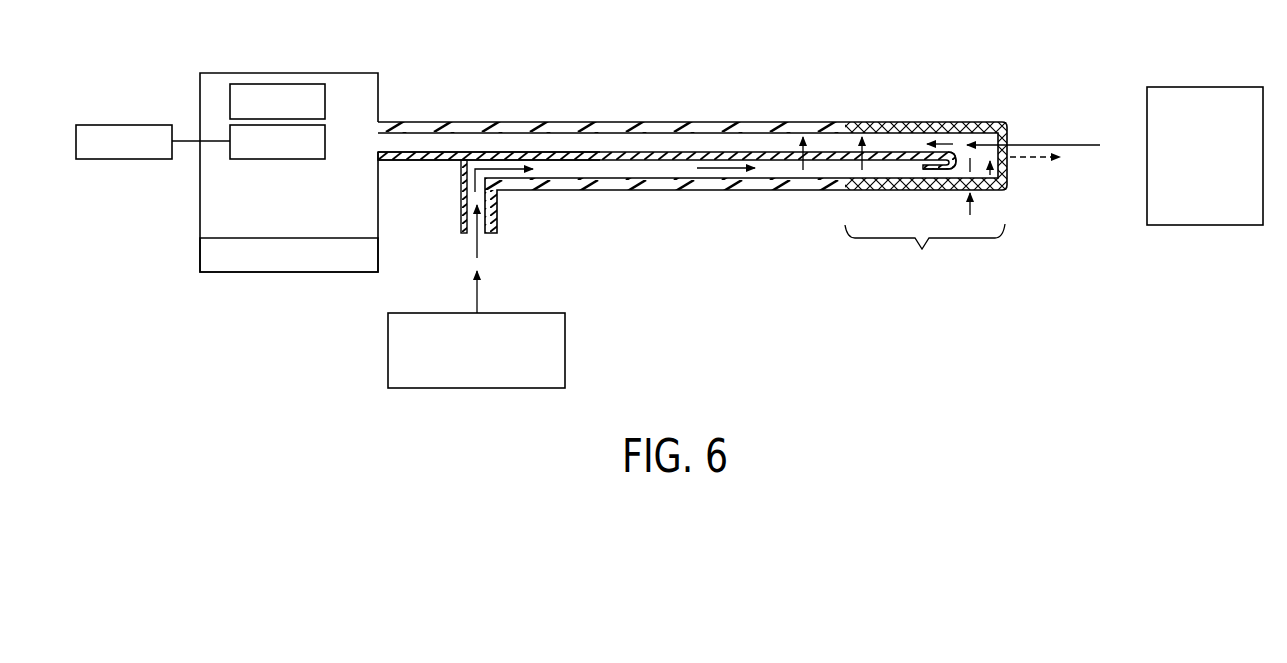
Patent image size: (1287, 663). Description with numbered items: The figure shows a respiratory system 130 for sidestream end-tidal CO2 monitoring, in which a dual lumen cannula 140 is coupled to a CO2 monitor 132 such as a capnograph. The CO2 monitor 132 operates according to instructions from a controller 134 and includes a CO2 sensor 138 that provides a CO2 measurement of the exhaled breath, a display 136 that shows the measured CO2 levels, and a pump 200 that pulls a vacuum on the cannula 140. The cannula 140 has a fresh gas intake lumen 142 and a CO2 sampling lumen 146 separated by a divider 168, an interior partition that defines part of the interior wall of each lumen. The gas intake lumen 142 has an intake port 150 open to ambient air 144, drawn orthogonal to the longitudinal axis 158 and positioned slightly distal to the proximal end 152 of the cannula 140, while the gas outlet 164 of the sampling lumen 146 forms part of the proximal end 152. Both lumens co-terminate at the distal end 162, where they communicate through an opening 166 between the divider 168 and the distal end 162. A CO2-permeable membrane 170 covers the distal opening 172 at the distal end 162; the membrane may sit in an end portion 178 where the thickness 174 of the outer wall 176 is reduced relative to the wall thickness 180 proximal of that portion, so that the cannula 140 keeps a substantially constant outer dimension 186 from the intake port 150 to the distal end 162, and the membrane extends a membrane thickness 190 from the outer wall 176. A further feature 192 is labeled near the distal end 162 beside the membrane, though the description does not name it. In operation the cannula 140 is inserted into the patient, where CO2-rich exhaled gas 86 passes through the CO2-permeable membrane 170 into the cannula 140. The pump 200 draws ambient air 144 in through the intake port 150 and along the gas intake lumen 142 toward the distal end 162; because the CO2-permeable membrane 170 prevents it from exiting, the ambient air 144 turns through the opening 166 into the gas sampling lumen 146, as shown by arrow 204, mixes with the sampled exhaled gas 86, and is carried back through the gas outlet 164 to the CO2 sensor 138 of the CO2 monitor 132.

The CO2-rich exhaled gas 86 is at (1232, 87).
The respiratory system 130 is at (331, 46).
The CO2 monitor 132 is at (245, 73).
The controller 134 is at (199, 255).
The display 136 is at (149, 125).
The CO2 sensor 138 is at (240, 162).
The cannula 140 is at (441, 119).
The gas intake lumen 142 is at (628, 195).
The ambient air 144 is at (475, 246).
The CO2 sampling lumen 146 is at (703, 142).
The intake port 150 is at (498, 208).
The proximal end 152 is at (396, 163).
The longitudinal axis 158 is at (1043, 146).
The distal end 162 is at (993, 119).
The gas outlet 164 is at (383, 144).
The opening 166 is at (1002, 192).
The divider 168 is at (730, 152).
The CO2-permeable membrane 170 is at (908, 122).
The distal opening 172 is at (1011, 191).
The thickness 174 is at (862, 120).
The outer wall 176 is at (668, 122).
The end portion 178 is at (926, 202).
The wall thickness 180 is at (803, 120).
The outer dimension 186 is at (628, 120).
The membrane thickness 190 is at (968, 203).
The exhaust outlet 192 is at (1008, 167).
The pump 200 is at (325, 99).
The arrow 204 is at (949, 150).